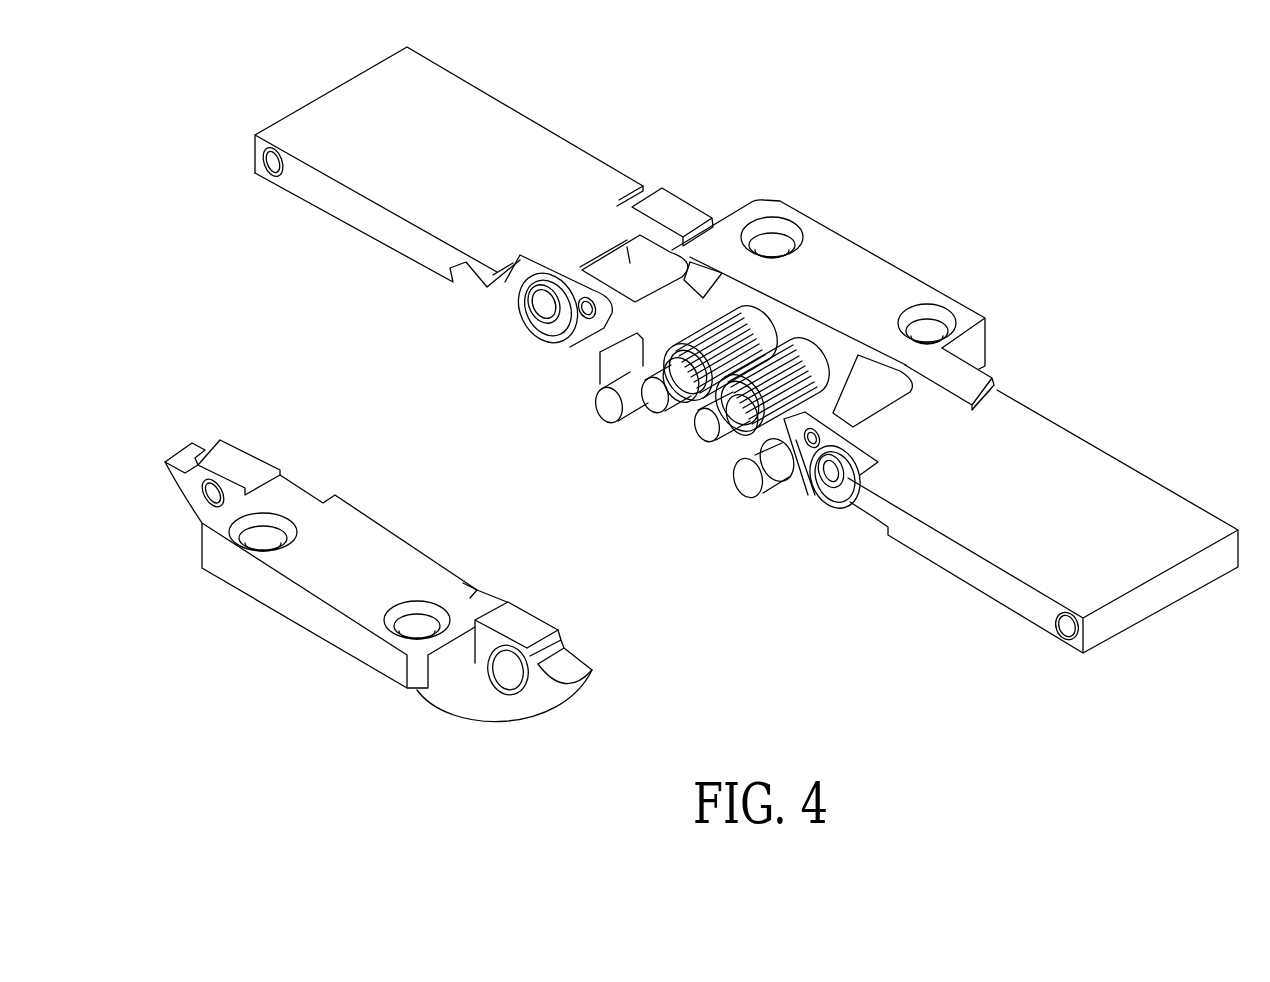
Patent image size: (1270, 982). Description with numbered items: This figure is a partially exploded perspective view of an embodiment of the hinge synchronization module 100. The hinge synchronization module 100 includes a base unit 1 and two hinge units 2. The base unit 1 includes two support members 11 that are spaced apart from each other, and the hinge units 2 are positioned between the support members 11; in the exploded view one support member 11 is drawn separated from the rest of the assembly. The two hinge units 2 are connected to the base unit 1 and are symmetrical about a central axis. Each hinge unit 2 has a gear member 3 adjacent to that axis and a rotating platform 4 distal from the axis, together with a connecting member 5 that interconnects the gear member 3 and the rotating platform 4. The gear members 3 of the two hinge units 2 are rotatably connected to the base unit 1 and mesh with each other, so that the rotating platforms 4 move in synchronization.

The hinge synchronization module 100 is at (1083, 242).
The base unit 1 is at (945, 270).
The support member 11 is at (855, 263).
The hinge unit 2 is at (375, 277).
The gear member 3 is at (707, 425).
The rotating platform 4 is at (523, 143).
The connecting member 5 is at (617, 367).